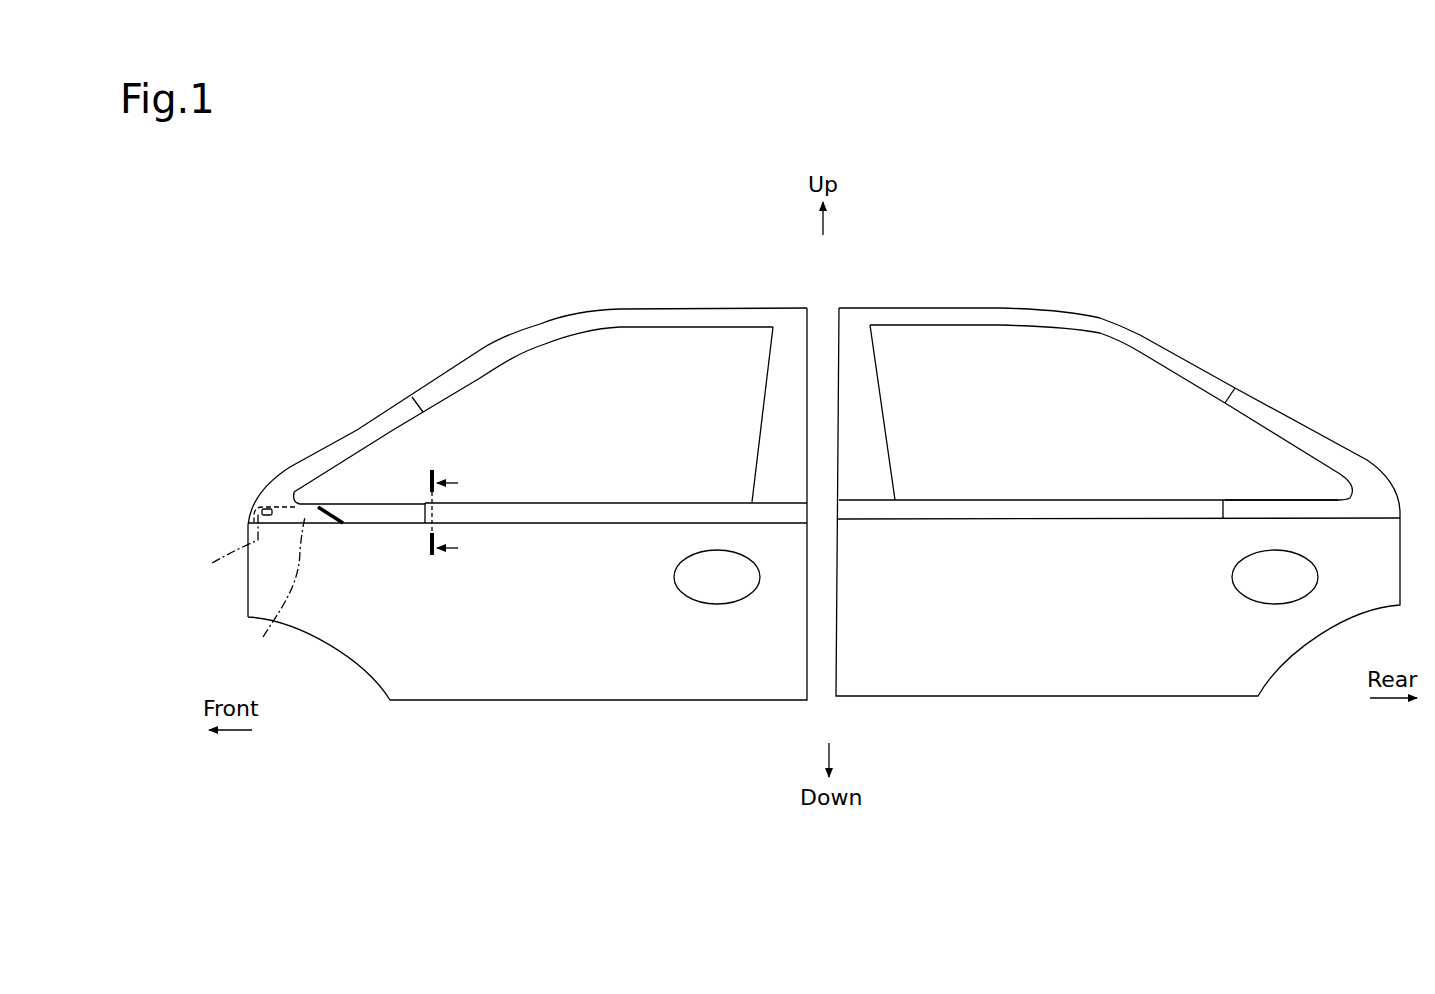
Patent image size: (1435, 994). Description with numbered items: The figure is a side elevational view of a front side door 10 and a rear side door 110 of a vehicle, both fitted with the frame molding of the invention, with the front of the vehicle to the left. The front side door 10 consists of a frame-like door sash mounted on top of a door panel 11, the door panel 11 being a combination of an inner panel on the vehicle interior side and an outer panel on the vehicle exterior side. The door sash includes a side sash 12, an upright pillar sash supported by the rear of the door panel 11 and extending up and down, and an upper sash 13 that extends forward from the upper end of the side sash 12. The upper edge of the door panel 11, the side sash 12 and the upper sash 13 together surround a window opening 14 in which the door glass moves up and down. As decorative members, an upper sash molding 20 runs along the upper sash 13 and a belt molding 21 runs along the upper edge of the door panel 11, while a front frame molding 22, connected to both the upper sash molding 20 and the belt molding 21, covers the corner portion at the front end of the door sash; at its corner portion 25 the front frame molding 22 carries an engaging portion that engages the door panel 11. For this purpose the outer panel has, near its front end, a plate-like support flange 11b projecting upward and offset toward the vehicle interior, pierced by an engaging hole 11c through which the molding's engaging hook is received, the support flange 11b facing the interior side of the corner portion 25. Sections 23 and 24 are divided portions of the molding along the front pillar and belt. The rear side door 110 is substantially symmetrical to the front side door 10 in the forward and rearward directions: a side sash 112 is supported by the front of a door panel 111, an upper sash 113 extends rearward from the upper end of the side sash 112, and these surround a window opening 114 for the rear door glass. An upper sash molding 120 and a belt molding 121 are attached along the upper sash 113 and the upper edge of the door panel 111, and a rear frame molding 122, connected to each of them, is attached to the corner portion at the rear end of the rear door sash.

The front side door 10 is at (437, 313).
The door panel 11 is at (632, 688).
The support flange 11b is at (274, 594).
The engaging hole 11c is at (240, 551).
The side sash 12 is at (757, 401).
The upper sash 13 is at (713, 305).
The window opening 14 is at (565, 392).
The upper sash molding 20 is at (602, 318).
The belt molding 21 is at (612, 512).
The front frame molding 22 is at (296, 460).
The front sash portion 23 is at (355, 438).
The belt line front portion 24 is at (380, 513).
The corner portion 25 is at (277, 496).
The rear side door 110 is at (1250, 315).
The door panel 111 is at (1052, 680).
The side sash 112 is at (886, 403).
The upper sash 113 is at (1002, 304).
The window opening 114 is at (1053, 362).
The upper sash molding 120 is at (1097, 336).
The belt molding 121 is at (1069, 508).
The rear frame molding 122 is at (1326, 437).